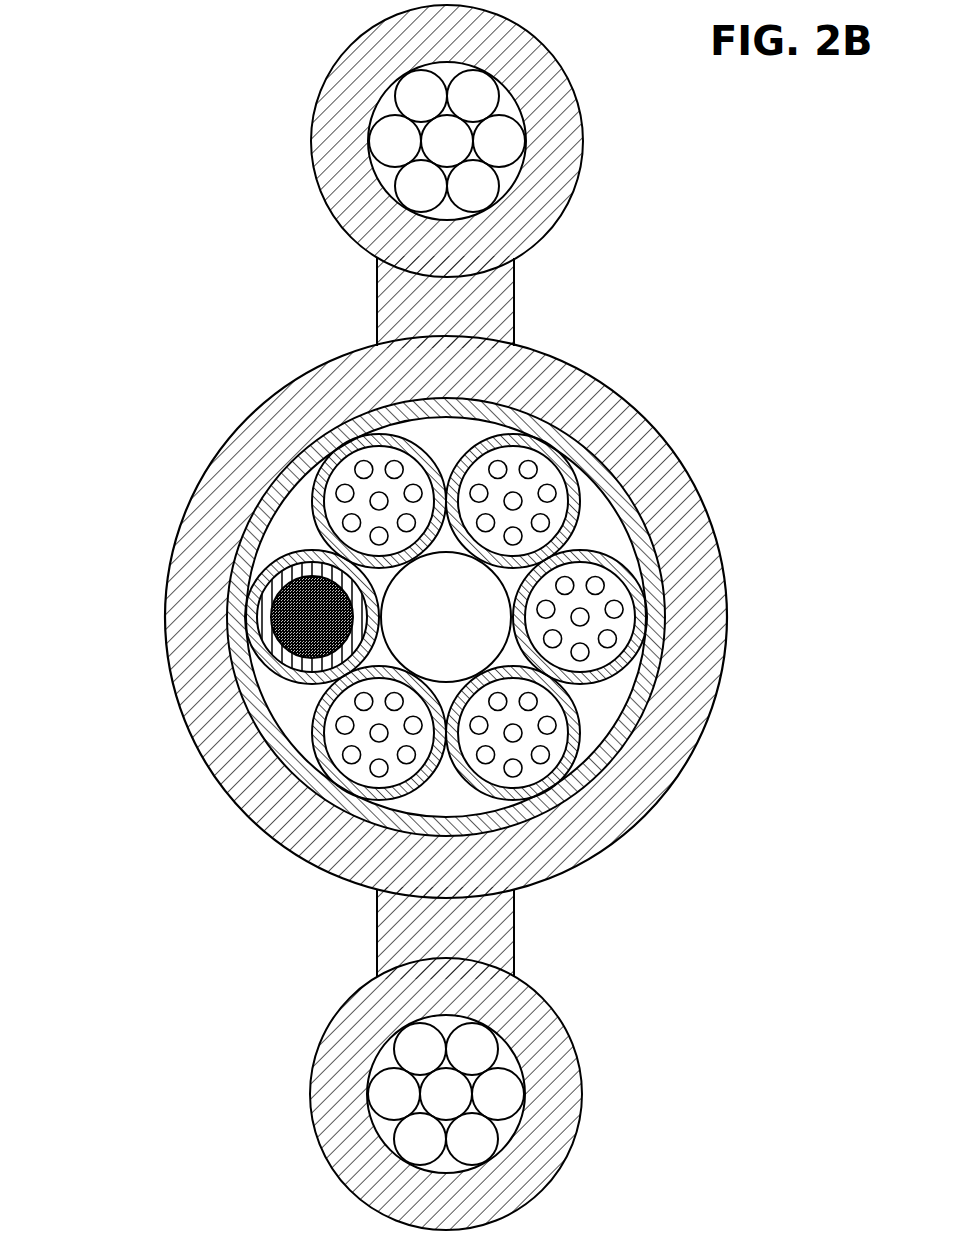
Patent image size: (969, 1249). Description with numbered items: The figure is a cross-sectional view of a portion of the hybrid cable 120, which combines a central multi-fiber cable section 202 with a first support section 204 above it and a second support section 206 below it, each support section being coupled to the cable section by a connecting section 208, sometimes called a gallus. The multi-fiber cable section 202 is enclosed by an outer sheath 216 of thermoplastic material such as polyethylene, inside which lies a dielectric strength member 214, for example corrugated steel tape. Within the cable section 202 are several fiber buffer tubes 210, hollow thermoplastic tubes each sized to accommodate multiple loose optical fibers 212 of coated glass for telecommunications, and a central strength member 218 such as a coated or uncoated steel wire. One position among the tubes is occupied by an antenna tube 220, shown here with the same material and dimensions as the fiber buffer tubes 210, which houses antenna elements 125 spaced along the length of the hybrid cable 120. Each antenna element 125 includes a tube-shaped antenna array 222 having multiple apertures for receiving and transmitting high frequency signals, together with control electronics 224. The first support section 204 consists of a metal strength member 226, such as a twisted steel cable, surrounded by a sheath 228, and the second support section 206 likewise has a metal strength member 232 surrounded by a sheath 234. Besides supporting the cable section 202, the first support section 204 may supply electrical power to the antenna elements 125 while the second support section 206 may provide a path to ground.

The hybrid cable 120 is at (132, 42).
The antenna element 125 is at (276, 551).
The multi-fiber cable section 202 is at (670, 392).
The first support section 204 is at (598, 145).
The second support section 206 is at (600, 1094).
The connecting section 208 is at (514, 308).
The fiber buffer tube 210 is at (310, 500).
The optical fiber 212 is at (325, 437).
The dielectric strength member 214 is at (270, 817).
The sheath 216 is at (253, 413).
The central strength member 218 is at (582, 752).
The antenna tube 220 is at (302, 778).
The tube-shaped antenna array 222 is at (273, 645).
The control electronics 224 is at (297, 672).
The metal strength member 226 is at (383, 160).
The sheath 228 is at (317, 120).
The metal strength member 232 is at (377, 1098).
The sheath 234 is at (318, 1055).